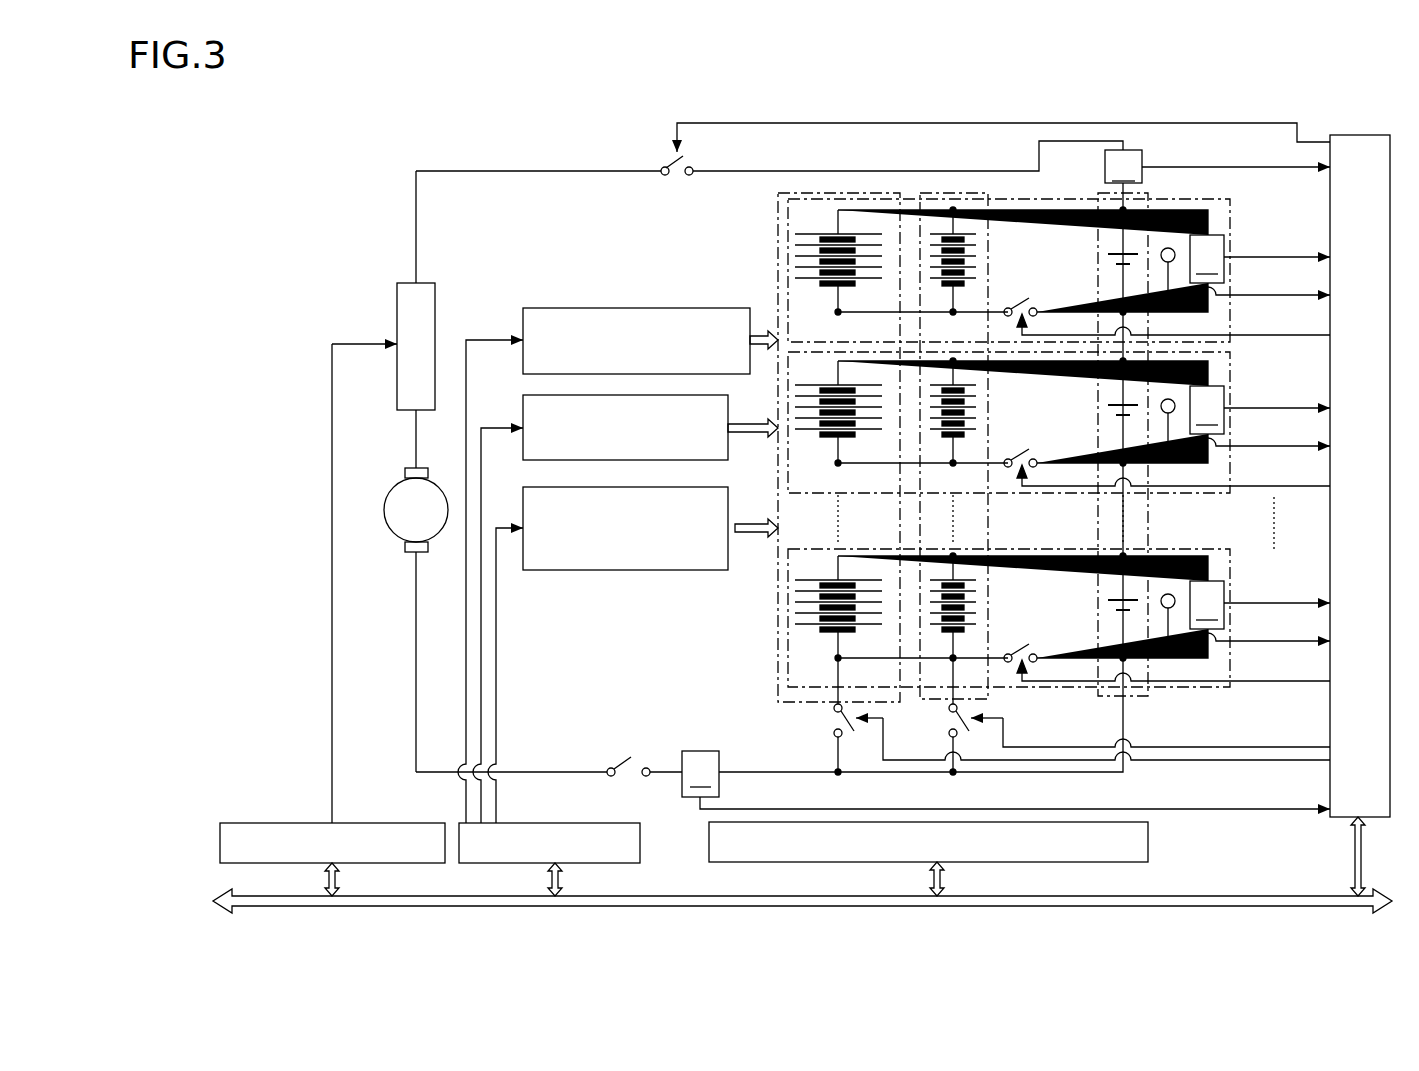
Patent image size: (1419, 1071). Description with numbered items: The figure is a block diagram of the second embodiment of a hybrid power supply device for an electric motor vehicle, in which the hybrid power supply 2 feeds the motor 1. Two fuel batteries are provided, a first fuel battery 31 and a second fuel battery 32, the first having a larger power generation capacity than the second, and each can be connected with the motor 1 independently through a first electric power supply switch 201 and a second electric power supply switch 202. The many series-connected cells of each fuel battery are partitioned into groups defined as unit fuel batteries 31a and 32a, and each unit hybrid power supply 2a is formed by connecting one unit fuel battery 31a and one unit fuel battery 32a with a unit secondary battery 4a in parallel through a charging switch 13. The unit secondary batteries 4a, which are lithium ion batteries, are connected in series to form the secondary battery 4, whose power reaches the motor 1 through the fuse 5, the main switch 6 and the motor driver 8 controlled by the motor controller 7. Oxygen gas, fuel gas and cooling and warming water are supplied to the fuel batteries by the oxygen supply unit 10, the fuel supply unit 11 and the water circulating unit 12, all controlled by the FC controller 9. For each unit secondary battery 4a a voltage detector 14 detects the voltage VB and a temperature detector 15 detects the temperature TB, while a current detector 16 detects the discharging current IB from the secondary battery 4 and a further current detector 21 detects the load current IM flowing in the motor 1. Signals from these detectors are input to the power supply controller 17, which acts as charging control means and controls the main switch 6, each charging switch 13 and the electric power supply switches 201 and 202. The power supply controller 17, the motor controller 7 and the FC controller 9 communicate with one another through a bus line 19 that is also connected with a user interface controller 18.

The motor 1 is at (385, 503).
The hybrid power supply 2 is at (740, 662).
The unit hybrid power supply 2a is at (788, 300).
The secondary battery 4 is at (1150, 672).
The unit secondary battery 4a is at (1108, 258).
The fuse 5 is at (626, 762).
The main switch 6 is at (676, 182).
The motor controller 7 is at (295, 823).
The motor driver 8 is at (397, 322).
The FC controller 9 is at (640, 853).
The oxygen supply unit 10 is at (597, 308).
The fuel supply unit 11 is at (540, 406).
The water circulating unit 12 is at (627, 570).
The charging switch 13 is at (1032, 305).
The voltage detector 14 is at (1260, 432).
The temperature detector 15 is at (1171, 248).
The current detector 16 is at (1217, 161).
The power supply controller 17 is at (1330, 720).
The user interface controller 18 is at (1148, 848).
The bus line 19 is at (1245, 896).
The first electric power supply switch 201 is at (834, 720).
The second electric power supply switch 202 is at (949, 720).
The current detector 21 is at (1006, 780).
The first fuel battery 31 is at (778, 222).
The unit fuel battery 31a is at (795, 262).
The second fuel battery 32 is at (937, 193).
The unit fuel battery 32a is at (978, 260).